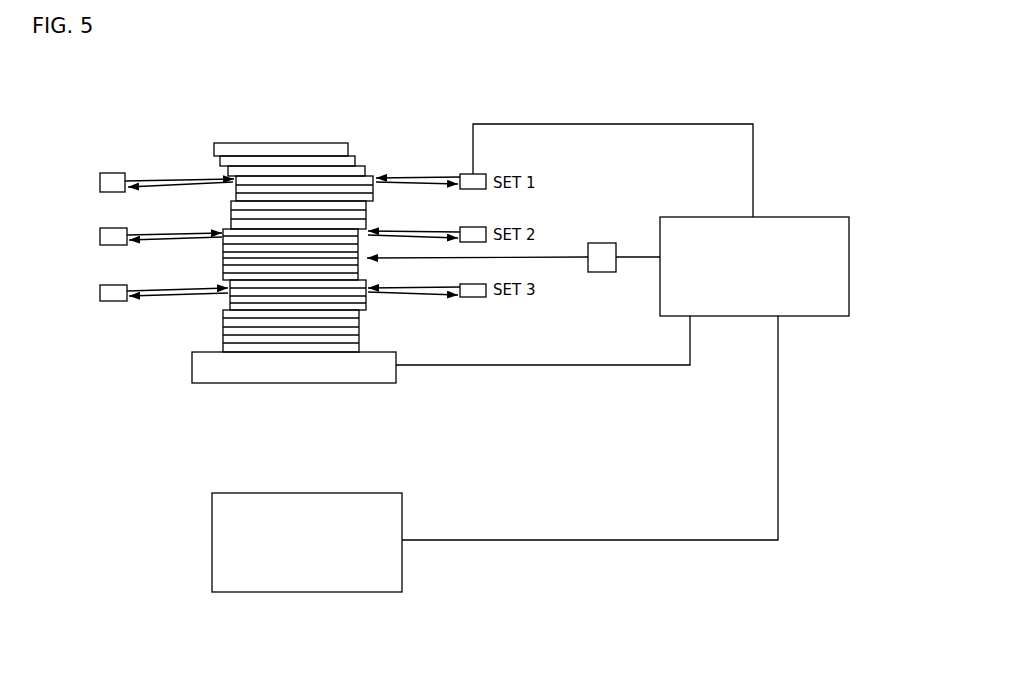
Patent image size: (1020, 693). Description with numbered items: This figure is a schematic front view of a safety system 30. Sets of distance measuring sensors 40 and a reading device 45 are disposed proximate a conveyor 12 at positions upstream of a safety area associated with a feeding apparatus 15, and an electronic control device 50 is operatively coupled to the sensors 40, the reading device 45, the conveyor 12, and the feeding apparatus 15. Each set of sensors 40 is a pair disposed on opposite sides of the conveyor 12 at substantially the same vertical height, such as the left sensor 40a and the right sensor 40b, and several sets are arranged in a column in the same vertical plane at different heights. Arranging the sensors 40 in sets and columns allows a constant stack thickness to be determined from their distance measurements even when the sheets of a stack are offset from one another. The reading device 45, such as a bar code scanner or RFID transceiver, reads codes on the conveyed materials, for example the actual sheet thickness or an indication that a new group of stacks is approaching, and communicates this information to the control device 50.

The safety system 30 is at (668, 98).
The conveyor 12 is at (362, 369).
The distance measuring sensors 40 is at (110, 173).
The sensor 40a is at (100, 234).
The sensor 40b is at (473, 226).
The reading device 45 is at (602, 243).
The electronic control device 50 is at (850, 265).
The feeding apparatus 15 is at (212, 532).